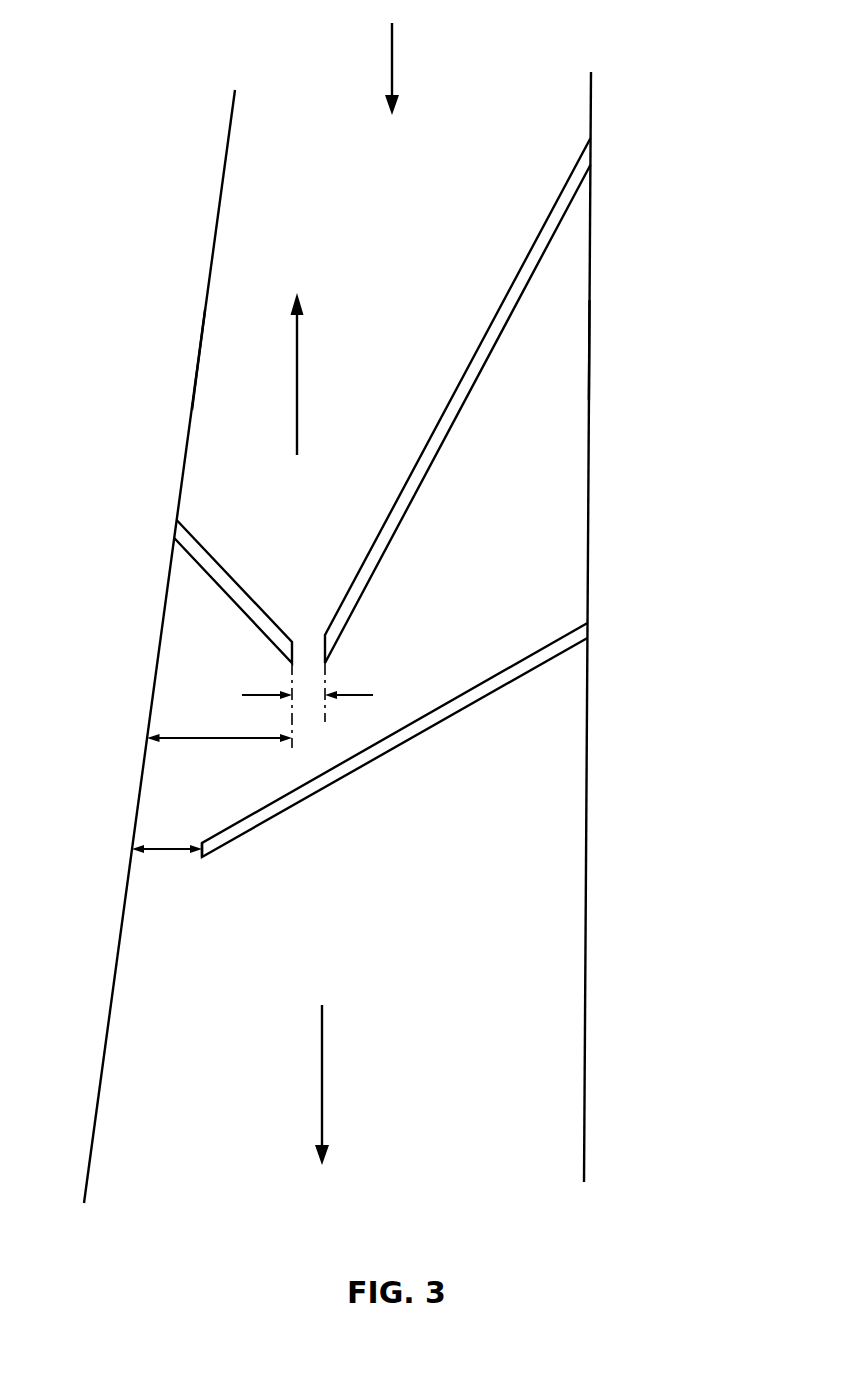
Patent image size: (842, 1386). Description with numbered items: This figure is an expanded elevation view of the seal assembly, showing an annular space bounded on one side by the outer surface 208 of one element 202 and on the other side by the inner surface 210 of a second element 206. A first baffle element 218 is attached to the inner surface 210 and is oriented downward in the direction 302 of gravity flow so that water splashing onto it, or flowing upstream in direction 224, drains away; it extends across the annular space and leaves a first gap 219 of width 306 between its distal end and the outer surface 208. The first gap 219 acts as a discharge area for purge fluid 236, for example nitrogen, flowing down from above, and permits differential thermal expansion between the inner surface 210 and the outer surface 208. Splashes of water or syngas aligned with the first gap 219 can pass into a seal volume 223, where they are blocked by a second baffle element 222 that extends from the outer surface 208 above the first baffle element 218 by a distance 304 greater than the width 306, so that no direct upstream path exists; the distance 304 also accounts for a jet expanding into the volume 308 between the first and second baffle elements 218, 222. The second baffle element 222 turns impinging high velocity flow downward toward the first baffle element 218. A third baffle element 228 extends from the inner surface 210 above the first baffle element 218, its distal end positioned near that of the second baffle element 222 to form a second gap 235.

The second wall 202 is at (591, 110).
The first wall 206 is at (213, 255).
The outer surface 208 is at (199, 351).
The inner surface 210 is at (588, 343).
The first baffle element 218 is at (567, 630).
The first gap 219 is at (198, 875).
The second baffle element 222 is at (197, 538).
The seal volume 223 is at (494, 597).
The direction 224 is at (297, 385).
The third baffle element 228 is at (506, 295).
The second gap 235 is at (303, 624).
The purge fluid 236 is at (392, 70).
The direction of gravity flow 302 is at (322, 1073).
The distance 304 is at (220, 738).
The width 306 is at (170, 850).
The volume 308 is at (218, 801).